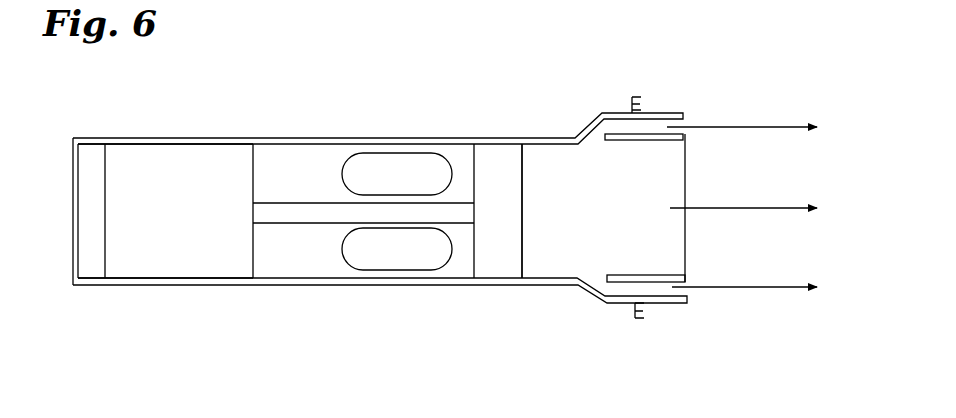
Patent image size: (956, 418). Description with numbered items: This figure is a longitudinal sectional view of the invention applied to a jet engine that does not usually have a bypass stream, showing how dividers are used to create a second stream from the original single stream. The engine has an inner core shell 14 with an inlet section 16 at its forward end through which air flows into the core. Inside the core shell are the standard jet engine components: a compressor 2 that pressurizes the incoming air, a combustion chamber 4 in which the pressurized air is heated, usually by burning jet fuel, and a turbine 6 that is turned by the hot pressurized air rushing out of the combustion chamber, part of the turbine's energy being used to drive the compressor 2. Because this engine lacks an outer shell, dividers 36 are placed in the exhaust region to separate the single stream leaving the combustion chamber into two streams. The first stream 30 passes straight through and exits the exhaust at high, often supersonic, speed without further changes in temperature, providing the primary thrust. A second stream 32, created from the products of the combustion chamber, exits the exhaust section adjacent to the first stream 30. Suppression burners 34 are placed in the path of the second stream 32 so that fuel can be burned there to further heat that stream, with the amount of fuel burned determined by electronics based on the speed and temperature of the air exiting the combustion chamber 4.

The compressor 2 is at (186, 251).
The combustion chamber 4 is at (388, 183).
The turbine 6 is at (503, 268).
The inner core shell 14 is at (87, 138).
The inlet section 16 is at (82, 171).
The first stream 30 is at (773, 211).
The second stream 32 is at (770, 133).
The suppression burners 34 is at (651, 100).
The dividers 36 is at (580, 48).